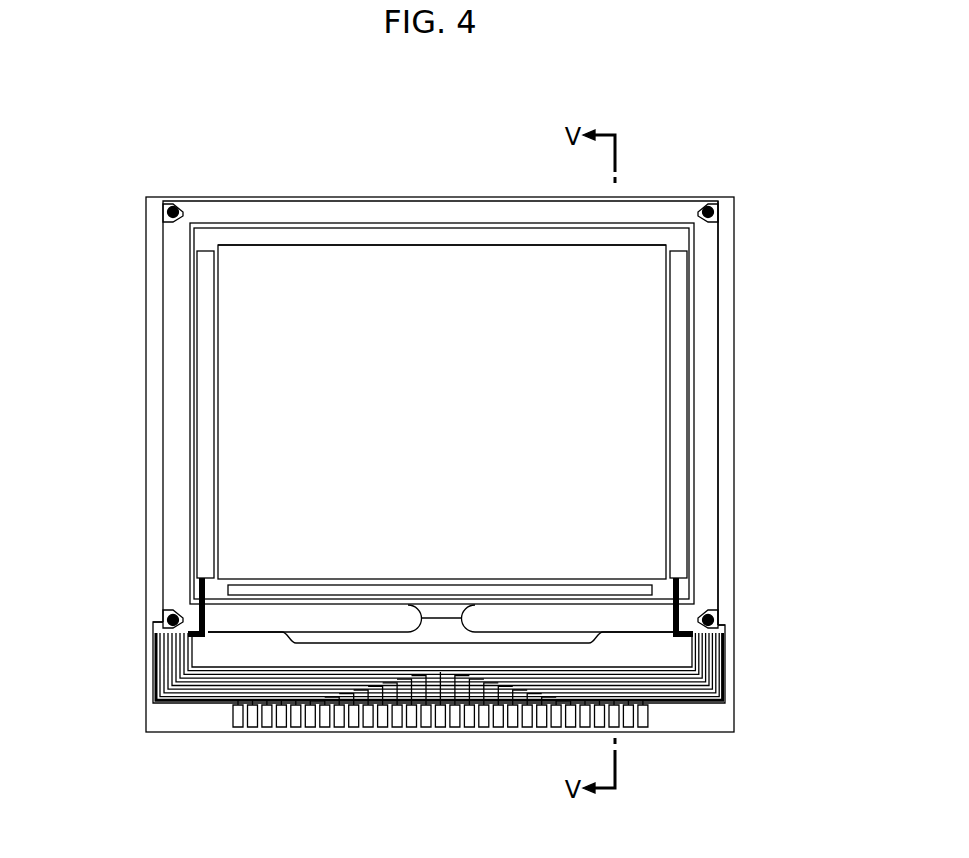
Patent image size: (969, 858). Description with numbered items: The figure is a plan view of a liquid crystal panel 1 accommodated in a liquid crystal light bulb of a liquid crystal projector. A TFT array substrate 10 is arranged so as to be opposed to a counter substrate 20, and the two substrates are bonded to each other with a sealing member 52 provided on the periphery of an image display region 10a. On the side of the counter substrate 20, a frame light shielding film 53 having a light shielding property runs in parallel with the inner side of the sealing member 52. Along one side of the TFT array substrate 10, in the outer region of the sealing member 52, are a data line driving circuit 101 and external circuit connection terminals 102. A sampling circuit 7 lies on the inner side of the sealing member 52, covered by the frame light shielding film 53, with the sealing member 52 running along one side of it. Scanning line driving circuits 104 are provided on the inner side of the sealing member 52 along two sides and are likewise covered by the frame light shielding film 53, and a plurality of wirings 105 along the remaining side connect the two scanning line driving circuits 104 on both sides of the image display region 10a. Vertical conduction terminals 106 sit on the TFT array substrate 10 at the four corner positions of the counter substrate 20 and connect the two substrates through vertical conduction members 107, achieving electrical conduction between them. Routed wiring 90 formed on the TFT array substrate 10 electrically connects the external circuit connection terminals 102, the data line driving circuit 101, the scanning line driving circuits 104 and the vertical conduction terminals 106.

The liquid crystal panel 1 is at (680, 127).
The TFT array substrate 10 is at (267, 201).
The image display region 10a is at (258, 370).
The counter substrate 20 is at (462, 201).
The wirings 105 is at (368, 238).
The scanning line driving circuits 104 is at (680, 417).
The sealing member 52 is at (708, 347).
The sampling circuit 7 is at (588, 593).
The frame light shielding film 53 is at (687, 585).
The vertical conduction terminals 106 is at (189, 212).
The vertical conduction members 107 is at (163, 628).
The routed wiring 90 is at (152, 682).
The data line driving circuit 101 is at (217, 658).
The external circuit connection terminals 102 is at (405, 712).